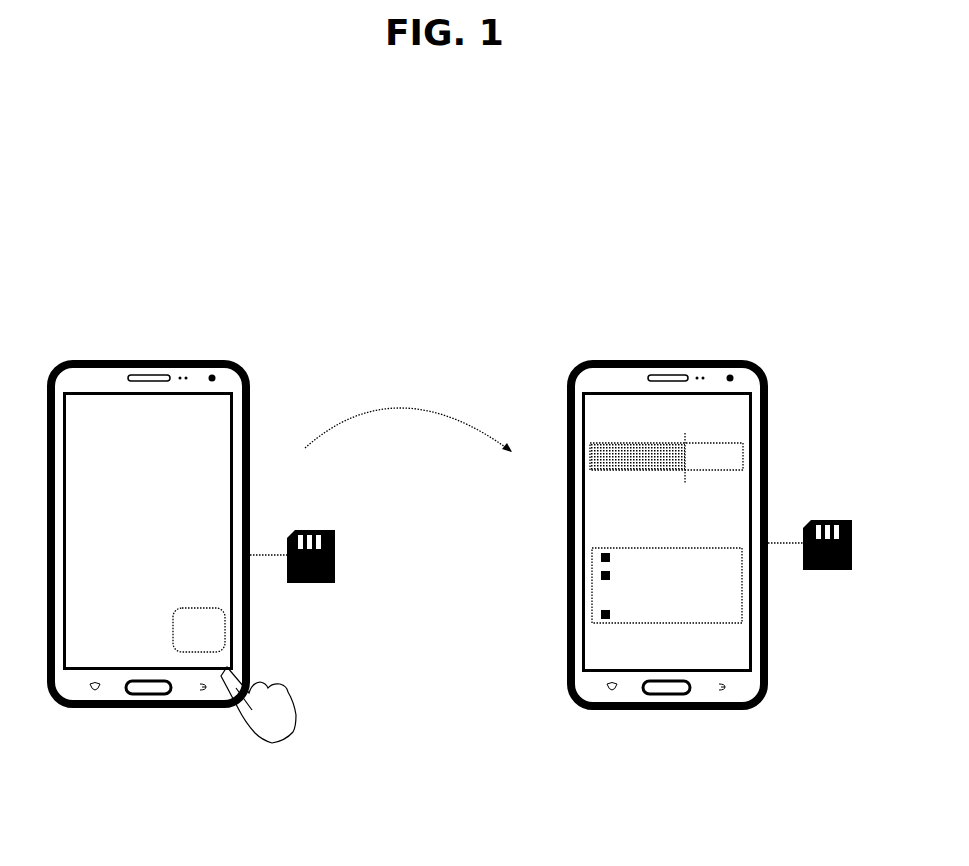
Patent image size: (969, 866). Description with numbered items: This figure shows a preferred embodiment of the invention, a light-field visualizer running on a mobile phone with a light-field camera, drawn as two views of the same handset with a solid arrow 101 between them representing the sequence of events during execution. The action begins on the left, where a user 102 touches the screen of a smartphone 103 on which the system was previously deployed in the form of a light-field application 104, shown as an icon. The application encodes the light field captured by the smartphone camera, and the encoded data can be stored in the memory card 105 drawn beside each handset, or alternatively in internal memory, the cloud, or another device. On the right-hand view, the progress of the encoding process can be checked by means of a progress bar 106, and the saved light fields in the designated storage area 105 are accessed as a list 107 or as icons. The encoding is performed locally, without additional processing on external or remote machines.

The solid arrow 101 is at (395, 421).
The user 102 is at (288, 735).
The smartphone 103 is at (203, 358).
The light-field application 104 is at (173, 623).
The memory card 105 is at (337, 583).
The progress bar 106 is at (728, 460).
The list 107 is at (707, 600).